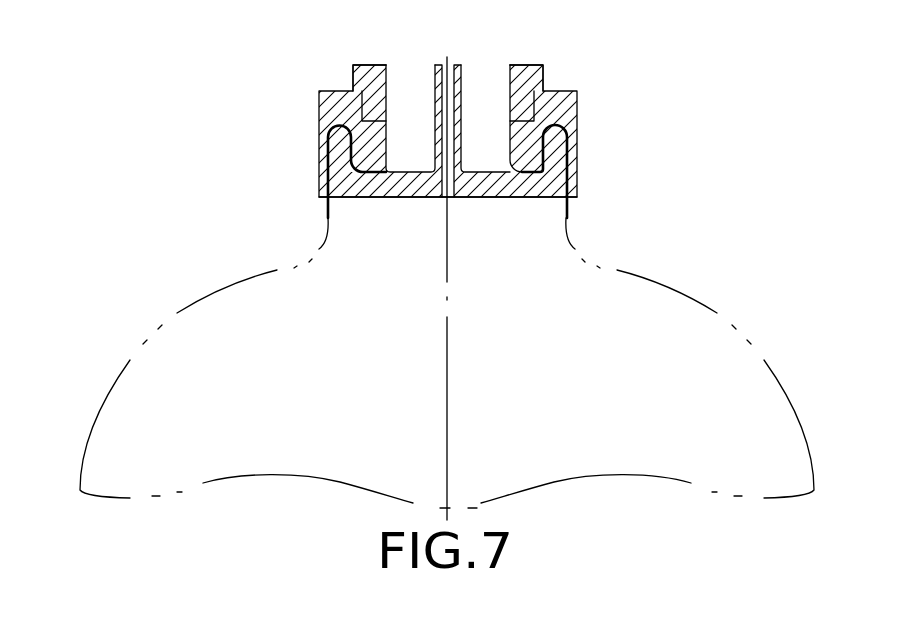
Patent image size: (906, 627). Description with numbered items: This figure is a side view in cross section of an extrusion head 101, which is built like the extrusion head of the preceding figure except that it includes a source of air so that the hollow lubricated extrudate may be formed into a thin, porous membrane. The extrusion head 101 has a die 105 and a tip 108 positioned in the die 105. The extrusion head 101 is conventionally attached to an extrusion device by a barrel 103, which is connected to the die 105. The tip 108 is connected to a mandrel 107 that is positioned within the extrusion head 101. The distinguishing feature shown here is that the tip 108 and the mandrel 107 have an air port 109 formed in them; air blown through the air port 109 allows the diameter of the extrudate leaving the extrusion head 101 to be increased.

The extrusion head 101 is at (322, 25).
The barrel 103 is at (354, 73).
The die 105 is at (318, 132).
The mandrel 107 is at (458, 64).
The tip 108 is at (557, 133).
The air port 109 is at (446, 199).